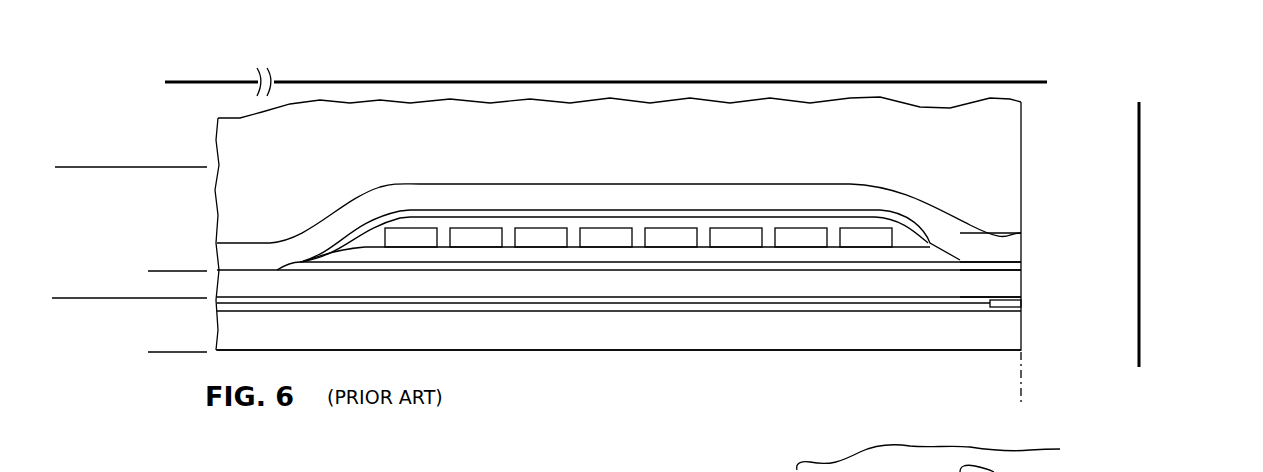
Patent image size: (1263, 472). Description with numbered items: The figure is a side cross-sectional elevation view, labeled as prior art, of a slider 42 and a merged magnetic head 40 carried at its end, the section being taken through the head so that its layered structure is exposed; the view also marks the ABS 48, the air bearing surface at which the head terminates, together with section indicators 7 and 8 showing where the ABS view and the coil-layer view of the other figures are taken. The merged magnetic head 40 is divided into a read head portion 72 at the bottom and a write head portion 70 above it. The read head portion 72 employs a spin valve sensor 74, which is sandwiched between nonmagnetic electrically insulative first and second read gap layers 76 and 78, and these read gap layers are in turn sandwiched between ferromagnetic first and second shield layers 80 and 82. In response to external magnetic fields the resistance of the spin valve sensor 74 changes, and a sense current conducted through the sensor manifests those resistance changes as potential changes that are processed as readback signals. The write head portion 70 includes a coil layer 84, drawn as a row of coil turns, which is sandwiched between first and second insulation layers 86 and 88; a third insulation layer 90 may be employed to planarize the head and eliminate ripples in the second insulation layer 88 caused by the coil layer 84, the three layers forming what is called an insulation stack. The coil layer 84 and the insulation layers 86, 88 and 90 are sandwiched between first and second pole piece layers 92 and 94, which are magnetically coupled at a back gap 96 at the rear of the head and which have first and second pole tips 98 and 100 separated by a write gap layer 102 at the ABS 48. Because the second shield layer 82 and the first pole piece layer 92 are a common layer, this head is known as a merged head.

The ABS view plane 7 is at (1150, 357).
The view plane for coil layer 8 is at (173, 80).
The merged magnetic head 40 is at (195, 126).
The slider 42 is at (1003, 133).
The ABS 48 is at (1023, 397).
The write head portion 70 is at (163, 263).
The read head portion 72 is at (163, 360).
The spin valve sensor 74 is at (1020, 303).
The first read gap layer 76 is at (687, 312).
The second read gap layer 78 is at (653, 295).
The first shield layer 80 is at (763, 335).
The second shield layer 82 is at (619, 338).
The coil layer 84 is at (668, 232).
The first insulation layer 86 is at (543, 255).
The second insulation layer 88 is at (913, 228).
The third insulation layer 90 is at (447, 213).
The first pole piece layer 92 is at (865, 282).
The second pole piece layer 94 is at (778, 193).
The back gap 96 is at (253, 268).
The first pole tip 98 is at (1020, 285).
The second pole tip 100 is at (1013, 243).
The write gap layer 102 is at (1017, 263).